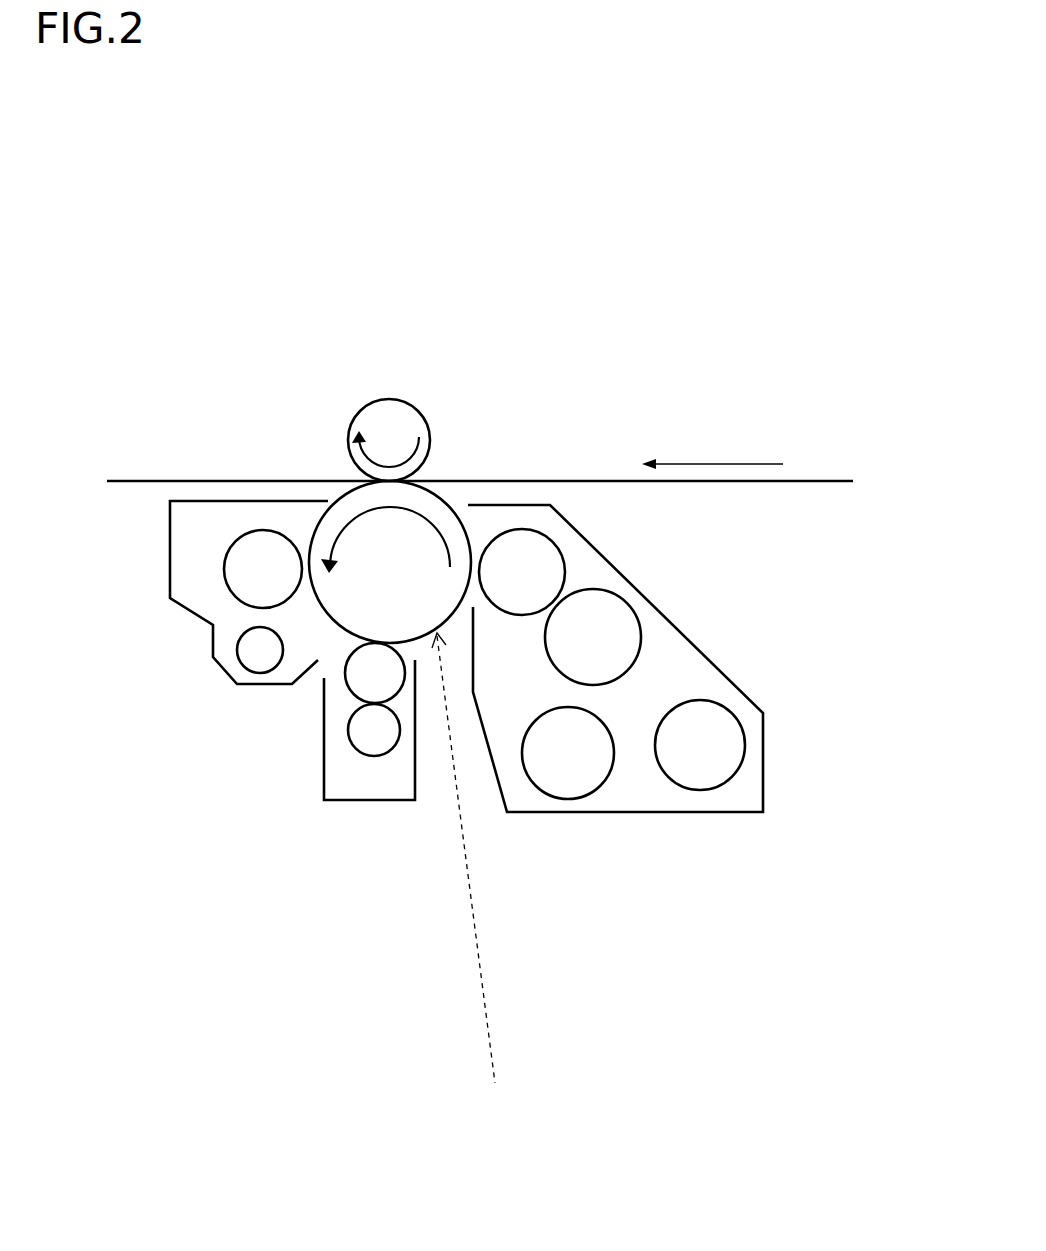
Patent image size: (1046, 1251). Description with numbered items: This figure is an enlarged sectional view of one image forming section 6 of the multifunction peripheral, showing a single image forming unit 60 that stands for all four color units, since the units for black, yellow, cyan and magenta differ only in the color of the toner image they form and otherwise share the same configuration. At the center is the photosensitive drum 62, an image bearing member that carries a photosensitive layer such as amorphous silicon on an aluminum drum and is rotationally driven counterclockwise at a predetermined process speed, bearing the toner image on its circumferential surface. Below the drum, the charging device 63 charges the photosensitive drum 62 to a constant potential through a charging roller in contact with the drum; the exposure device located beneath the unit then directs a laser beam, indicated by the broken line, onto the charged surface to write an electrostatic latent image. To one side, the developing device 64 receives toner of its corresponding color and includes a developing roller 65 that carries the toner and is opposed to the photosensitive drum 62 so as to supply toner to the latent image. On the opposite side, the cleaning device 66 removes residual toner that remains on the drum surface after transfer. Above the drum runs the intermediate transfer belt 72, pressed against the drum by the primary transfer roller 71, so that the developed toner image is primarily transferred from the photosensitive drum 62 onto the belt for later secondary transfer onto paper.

The image forming section 6 is at (740, 905).
The image forming unit 60 is at (260, 827).
The photosensitive drum 62 is at (348, 500).
The charging device 63 is at (368, 800).
The developing device 64 is at (637, 812).
The developing roller 65 is at (540, 562).
The cleaning device 66 is at (170, 571).
The primary transfer roller 71 is at (388, 415).
The intermediate transfer belt 72 is at (602, 481).